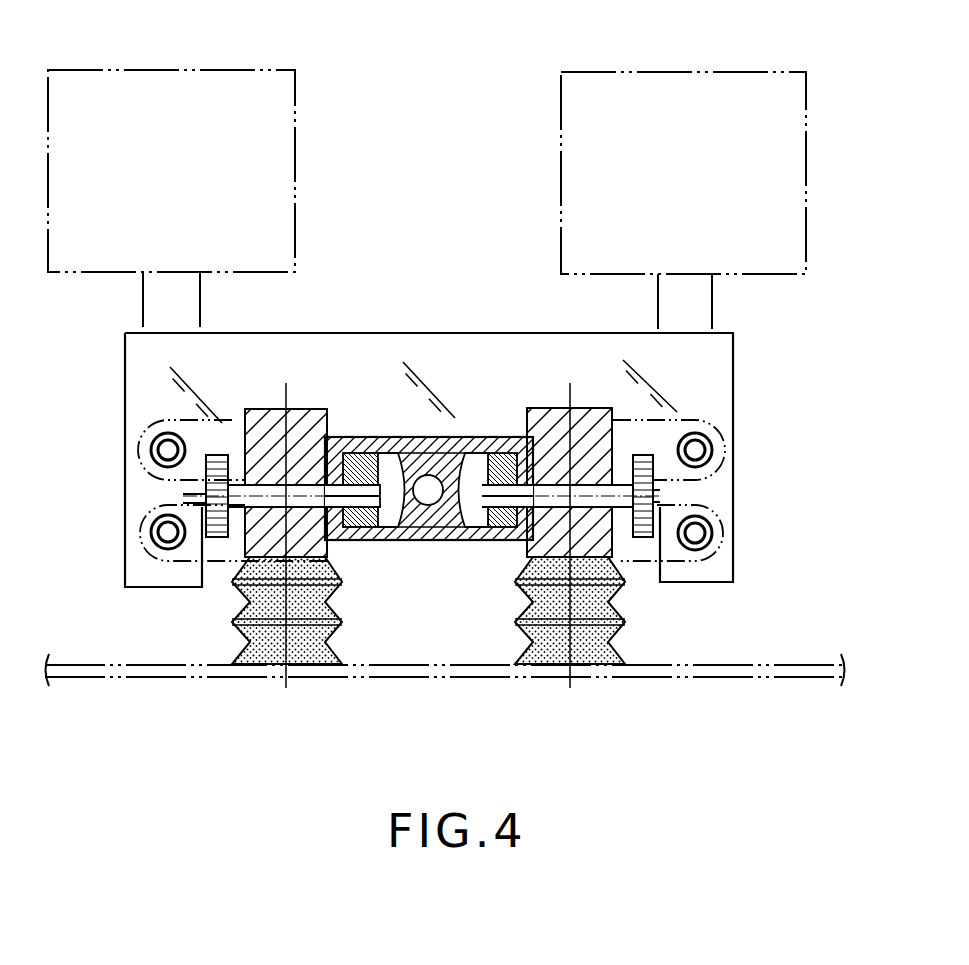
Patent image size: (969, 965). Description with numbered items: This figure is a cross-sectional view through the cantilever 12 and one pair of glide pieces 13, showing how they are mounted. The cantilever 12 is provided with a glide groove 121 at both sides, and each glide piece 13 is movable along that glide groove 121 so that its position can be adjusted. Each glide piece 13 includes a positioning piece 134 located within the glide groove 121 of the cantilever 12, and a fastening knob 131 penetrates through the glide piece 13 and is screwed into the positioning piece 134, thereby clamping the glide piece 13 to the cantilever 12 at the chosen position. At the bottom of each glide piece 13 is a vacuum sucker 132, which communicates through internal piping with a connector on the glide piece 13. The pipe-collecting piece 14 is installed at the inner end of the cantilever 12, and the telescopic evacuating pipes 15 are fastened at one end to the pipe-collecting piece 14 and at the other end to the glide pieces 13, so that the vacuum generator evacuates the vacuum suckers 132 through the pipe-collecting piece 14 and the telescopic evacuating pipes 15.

The cantilever 12 is at (429, 496).
The glide groove 121 is at (471, 470).
The glide piece 13 is at (551, 436).
The fastening knob 131 is at (655, 485).
The vacuum sucker 132 is at (593, 628).
The positioning piece 134 is at (497, 528).
The pipe-collecting piece 14 is at (434, 356).
The telescopic evacuating pipe 15 is at (702, 447).